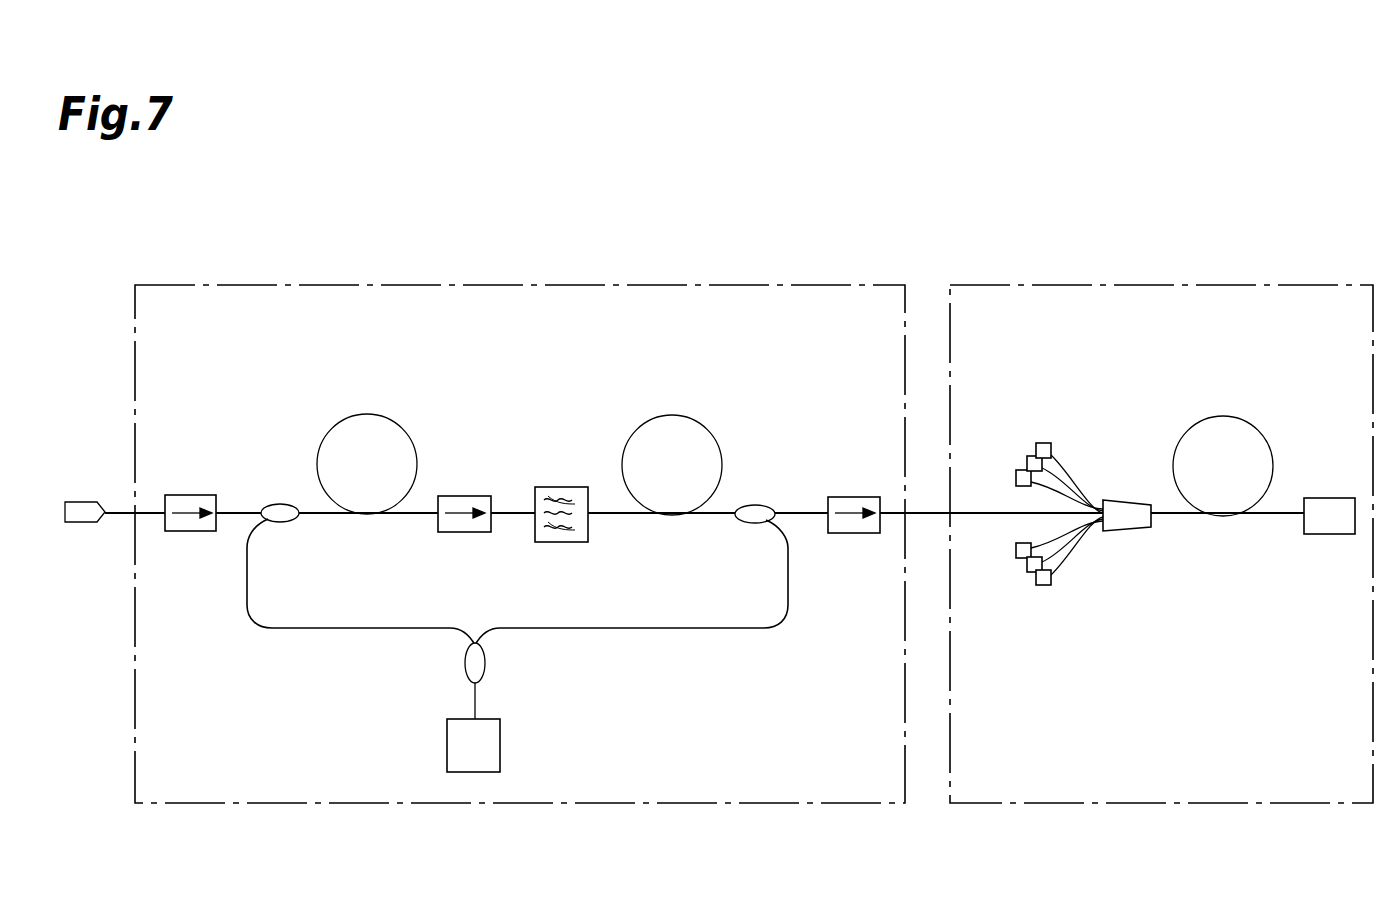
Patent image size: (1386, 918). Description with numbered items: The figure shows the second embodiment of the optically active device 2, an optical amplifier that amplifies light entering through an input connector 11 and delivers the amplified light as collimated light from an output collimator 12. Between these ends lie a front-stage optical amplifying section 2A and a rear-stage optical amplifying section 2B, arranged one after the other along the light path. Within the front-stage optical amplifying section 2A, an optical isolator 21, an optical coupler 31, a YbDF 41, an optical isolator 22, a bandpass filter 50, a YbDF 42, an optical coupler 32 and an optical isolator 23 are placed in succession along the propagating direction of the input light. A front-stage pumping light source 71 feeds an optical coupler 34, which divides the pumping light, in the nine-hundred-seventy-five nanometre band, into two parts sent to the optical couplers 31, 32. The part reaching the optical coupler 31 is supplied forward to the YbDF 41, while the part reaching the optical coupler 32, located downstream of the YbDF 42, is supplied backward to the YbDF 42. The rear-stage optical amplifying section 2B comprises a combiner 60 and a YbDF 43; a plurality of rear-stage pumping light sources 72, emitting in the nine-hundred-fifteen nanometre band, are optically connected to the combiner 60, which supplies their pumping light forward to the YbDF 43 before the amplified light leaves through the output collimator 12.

The optically active device 2 is at (1247, 186).
The front-stage optical amplifying section 2A is at (788, 283).
The rear-stage optical amplifying section 2B is at (1277, 285).
The input connector 11 is at (86, 502).
The output collimator 12 is at (1332, 498).
The optical isolator 21 is at (190, 495).
The optical isolator 22 is at (466, 496).
The optical isolator 23 is at (855, 497).
The optical coupler 31 is at (282, 504).
The optical coupler 32 is at (757, 505).
The optical coupler 34 is at (486, 663).
The YbDF 41 is at (368, 414).
The YbDF 42 is at (672, 415).
The YbDF 43 is at (1224, 416).
The bandpass filter 50 is at (564, 487).
The combiner 60 is at (1121, 500).
The front-stage pumping light source 71 is at (500, 745).
The rear-stage pumping light sources 72 is at (1043, 443).